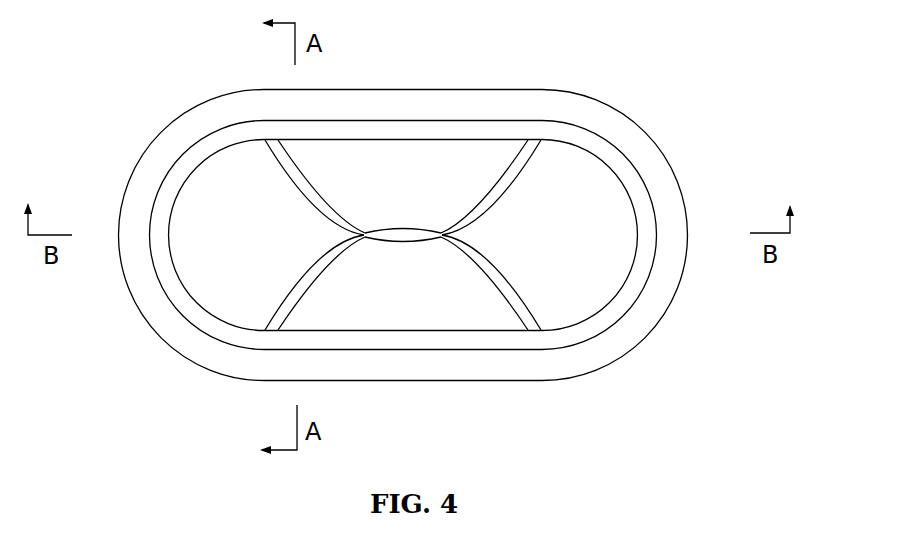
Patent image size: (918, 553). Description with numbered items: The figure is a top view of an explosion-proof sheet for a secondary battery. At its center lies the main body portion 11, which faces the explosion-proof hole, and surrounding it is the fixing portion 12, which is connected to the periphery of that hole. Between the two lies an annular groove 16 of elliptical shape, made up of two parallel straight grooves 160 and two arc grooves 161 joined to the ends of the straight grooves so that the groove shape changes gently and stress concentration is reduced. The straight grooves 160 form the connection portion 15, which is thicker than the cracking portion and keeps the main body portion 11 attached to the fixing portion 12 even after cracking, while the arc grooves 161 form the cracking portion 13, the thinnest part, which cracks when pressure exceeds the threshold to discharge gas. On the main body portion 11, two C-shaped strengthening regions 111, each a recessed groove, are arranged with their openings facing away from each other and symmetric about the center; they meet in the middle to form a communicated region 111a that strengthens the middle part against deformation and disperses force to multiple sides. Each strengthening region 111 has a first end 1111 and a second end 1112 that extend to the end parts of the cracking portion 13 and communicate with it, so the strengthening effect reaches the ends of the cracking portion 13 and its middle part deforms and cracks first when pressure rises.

The main body portion 11 is at (438, 255).
The fixing portion 12 is at (257, 102).
The annular groove 16 is at (454, 175).
The straight grooves 160 is at (403, 202).
The connection portion 15 is at (497, 130).
The arc grooves 161 is at (463, 193).
The cracking portion 13 is at (608, 150).
The strengthening region 111 is at (438, 347).
The first end 1111 is at (275, 333).
The second end 1112 is at (533, 330).
The communicated region 111a is at (407, 233).